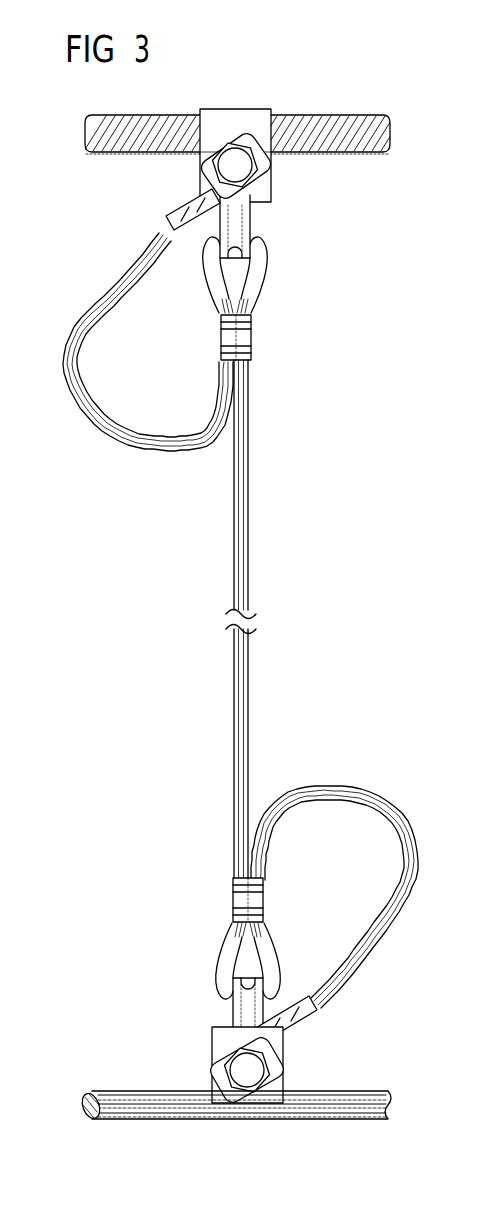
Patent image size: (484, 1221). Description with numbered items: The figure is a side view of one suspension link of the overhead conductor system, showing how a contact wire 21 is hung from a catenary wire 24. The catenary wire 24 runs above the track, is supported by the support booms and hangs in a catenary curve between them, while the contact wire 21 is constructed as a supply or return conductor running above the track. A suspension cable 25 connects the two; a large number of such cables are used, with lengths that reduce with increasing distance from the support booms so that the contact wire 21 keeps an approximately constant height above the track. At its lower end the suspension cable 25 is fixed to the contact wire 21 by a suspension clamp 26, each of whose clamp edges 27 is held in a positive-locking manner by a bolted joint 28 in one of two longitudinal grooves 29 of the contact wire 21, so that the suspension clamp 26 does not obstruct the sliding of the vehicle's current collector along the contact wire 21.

The contact wire 21 is at (132, 1114).
The catenary wire 24 is at (346, 122).
The suspension cable 25 is at (240, 566).
The suspension clamp 26 is at (218, 1045).
The clamp edge 27 is at (262, 1099).
The bolted joint 28 is at (256, 1076).
The longitudinal groove 29 is at (106, 1094).